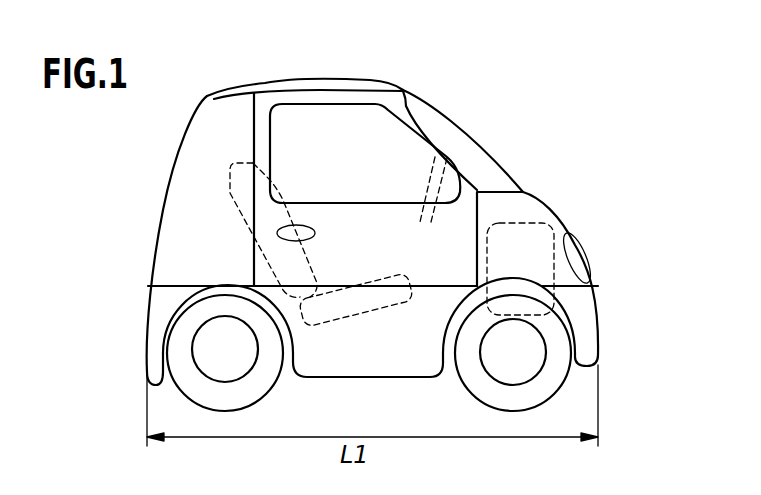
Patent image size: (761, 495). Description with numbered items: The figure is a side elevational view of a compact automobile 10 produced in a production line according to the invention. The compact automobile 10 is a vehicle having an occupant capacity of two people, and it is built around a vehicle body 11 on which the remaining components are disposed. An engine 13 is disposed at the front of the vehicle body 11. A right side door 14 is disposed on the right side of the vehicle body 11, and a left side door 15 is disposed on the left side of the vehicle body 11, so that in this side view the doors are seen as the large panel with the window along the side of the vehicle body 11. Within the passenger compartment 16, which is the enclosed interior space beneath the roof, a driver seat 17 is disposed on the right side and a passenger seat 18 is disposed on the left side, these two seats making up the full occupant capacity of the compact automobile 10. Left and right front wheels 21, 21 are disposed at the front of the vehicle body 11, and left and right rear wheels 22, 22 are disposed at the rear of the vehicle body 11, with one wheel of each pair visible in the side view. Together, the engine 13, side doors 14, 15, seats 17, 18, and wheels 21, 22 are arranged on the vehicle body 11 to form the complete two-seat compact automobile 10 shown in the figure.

The compact automobile 10 is at (373, 217).
The vehicle body 11 is at (527, 192).
The engine 13 is at (543, 257).
The right side door 14 is at (370, 377).
The left side door 15 is at (417, 328).
The passenger compartment 16 is at (343, 148).
The driver seat 17 is at (223, 245).
The passenger seat 18 is at (277, 253).
The front wheels 21 is at (563, 332).
The rear wheels 22 is at (177, 351).